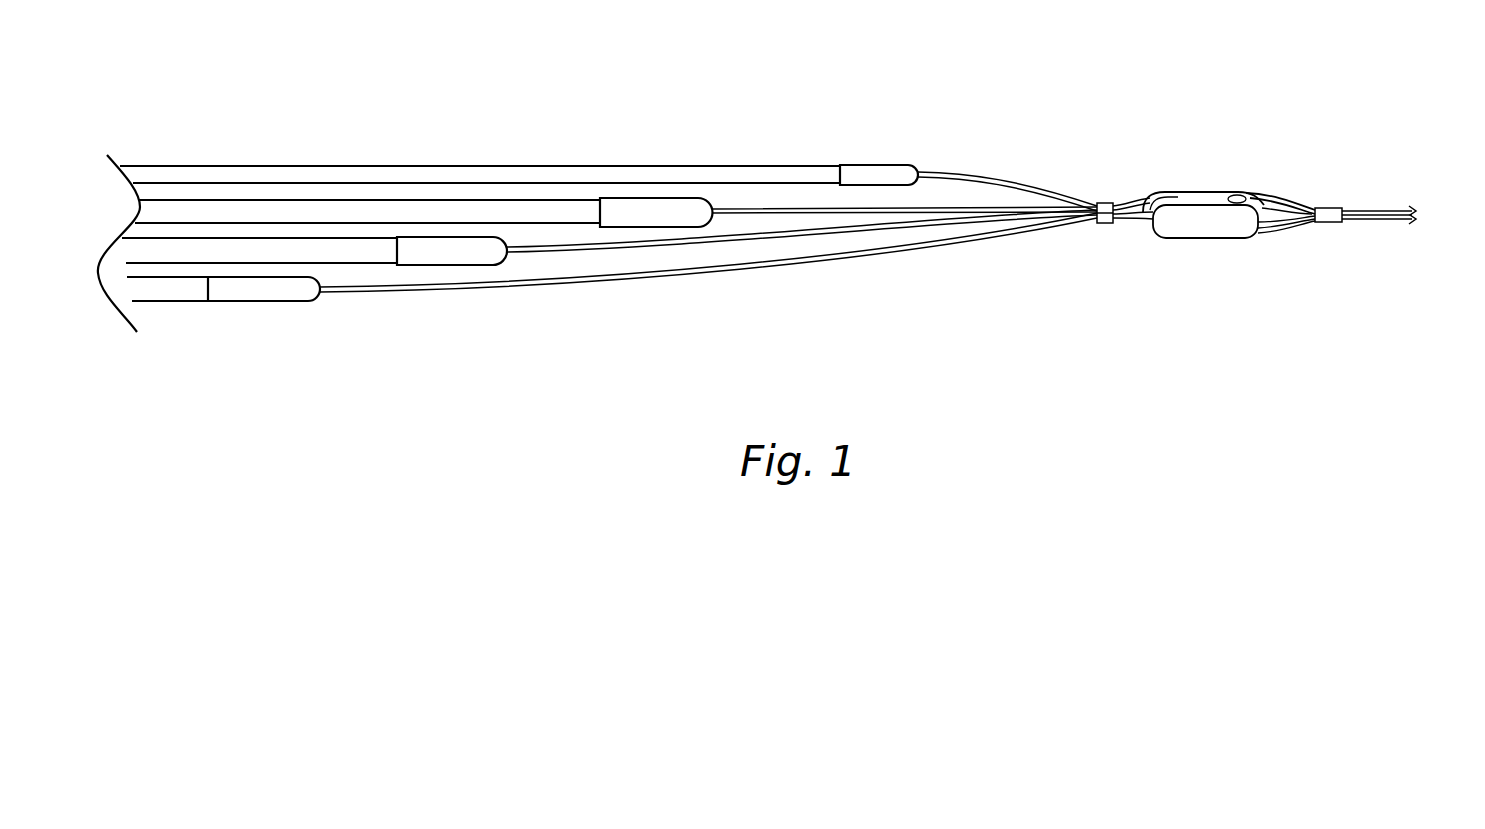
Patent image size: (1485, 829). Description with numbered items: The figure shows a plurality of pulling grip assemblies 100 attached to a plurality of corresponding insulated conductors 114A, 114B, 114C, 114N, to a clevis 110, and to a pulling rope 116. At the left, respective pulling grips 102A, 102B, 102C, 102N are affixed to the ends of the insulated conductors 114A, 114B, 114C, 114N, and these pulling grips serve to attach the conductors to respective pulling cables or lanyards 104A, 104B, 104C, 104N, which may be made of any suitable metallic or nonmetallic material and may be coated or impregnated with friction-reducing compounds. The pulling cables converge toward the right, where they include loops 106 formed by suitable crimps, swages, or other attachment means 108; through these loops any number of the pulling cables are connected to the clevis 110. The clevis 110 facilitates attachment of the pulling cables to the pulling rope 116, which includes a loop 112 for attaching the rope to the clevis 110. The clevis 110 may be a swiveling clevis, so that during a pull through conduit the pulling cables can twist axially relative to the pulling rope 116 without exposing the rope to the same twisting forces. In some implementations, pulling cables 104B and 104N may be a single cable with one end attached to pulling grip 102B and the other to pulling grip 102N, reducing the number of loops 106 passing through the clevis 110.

The pulling grip assemblies 100 is at (995, 40).
The pulling grip 102A is at (865, 173).
The pulling grip 102B is at (487, 248).
The pulling grip 102C is at (693, 213).
The pulling grip 102N is at (302, 290).
The pulling cable 104A is at (1000, 180).
The pulling cable 104B is at (757, 238).
The pulling cable 104C is at (917, 207).
The pulling cable 104N is at (590, 287).
The loops 106 is at (1152, 192).
The attachment means 108 is at (1108, 220).
The clevis 110 is at (1205, 217).
The loop 112 is at (1287, 200).
The insulated conductor 114A is at (165, 172).
The insulated conductor 114B is at (175, 213).
The insulated conductor 114C is at (190, 250).
The insulated conductor 114N is at (152, 290).
The pulling rope 116 is at (1357, 215).